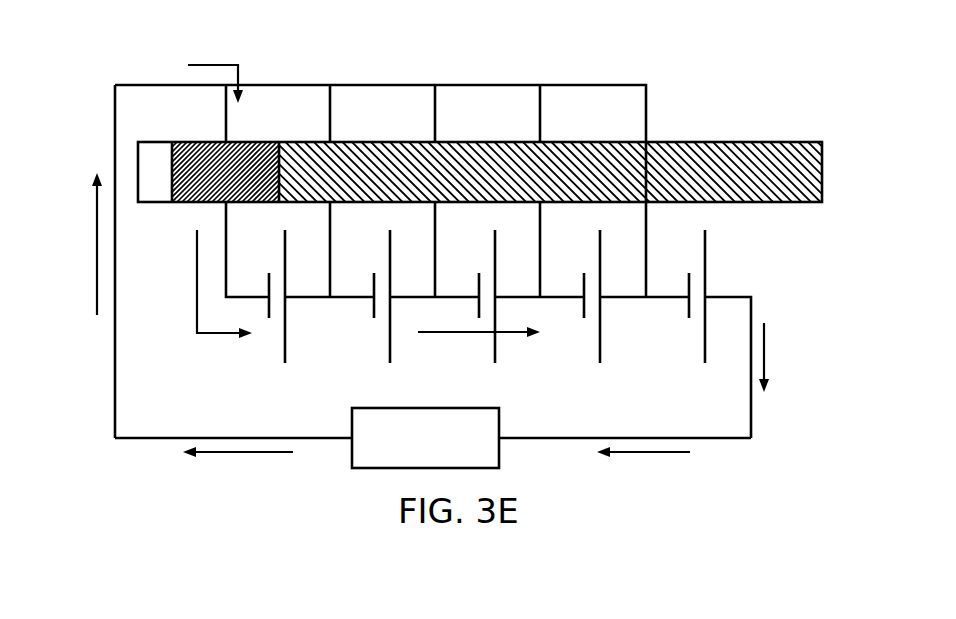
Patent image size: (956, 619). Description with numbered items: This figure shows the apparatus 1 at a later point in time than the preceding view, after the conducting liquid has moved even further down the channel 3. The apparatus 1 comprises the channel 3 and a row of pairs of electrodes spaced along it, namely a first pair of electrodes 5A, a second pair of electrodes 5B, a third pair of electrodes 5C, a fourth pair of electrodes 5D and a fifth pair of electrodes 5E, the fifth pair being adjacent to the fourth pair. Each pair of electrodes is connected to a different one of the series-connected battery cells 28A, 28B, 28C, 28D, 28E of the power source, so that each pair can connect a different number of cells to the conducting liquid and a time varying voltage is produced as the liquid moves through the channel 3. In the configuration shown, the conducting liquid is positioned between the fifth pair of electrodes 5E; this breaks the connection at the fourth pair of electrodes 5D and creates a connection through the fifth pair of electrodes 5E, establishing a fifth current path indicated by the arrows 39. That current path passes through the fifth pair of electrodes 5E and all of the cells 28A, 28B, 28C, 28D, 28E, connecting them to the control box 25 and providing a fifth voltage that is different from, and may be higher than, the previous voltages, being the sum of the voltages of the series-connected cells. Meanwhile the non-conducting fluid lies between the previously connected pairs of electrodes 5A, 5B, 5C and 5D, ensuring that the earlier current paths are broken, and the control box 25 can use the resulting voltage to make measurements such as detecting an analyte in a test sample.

The apparatus 1 is at (802, 113).
The channel 3 is at (822, 168).
The first pair of electrodes 5A is at (647, 140).
The second pair of electrodes 5B is at (540, 140).
The third pair of electrodes 5C is at (435, 140).
The fourth pair of electrodes 5D is at (330, 140).
The fifth pair of electrodes 5E is at (226, 140).
The control box 25 is at (499, 448).
The battery cell 28A is at (717, 334).
The battery cell 28B is at (601, 316).
The battery cell 28C is at (495, 316).
The battery cell 28D is at (391, 316).
The battery cell 28E is at (283, 316).
The arrows 39 is at (241, 74).